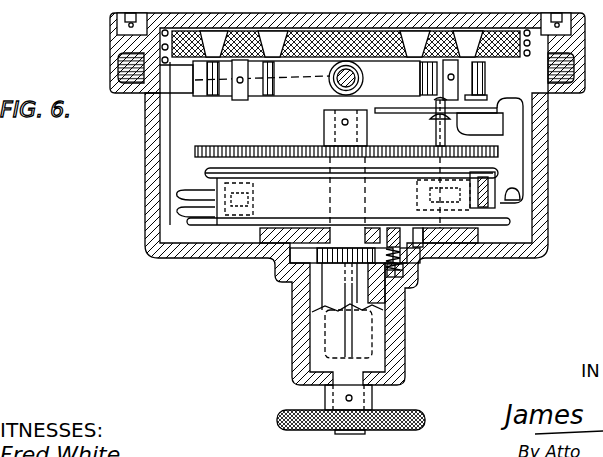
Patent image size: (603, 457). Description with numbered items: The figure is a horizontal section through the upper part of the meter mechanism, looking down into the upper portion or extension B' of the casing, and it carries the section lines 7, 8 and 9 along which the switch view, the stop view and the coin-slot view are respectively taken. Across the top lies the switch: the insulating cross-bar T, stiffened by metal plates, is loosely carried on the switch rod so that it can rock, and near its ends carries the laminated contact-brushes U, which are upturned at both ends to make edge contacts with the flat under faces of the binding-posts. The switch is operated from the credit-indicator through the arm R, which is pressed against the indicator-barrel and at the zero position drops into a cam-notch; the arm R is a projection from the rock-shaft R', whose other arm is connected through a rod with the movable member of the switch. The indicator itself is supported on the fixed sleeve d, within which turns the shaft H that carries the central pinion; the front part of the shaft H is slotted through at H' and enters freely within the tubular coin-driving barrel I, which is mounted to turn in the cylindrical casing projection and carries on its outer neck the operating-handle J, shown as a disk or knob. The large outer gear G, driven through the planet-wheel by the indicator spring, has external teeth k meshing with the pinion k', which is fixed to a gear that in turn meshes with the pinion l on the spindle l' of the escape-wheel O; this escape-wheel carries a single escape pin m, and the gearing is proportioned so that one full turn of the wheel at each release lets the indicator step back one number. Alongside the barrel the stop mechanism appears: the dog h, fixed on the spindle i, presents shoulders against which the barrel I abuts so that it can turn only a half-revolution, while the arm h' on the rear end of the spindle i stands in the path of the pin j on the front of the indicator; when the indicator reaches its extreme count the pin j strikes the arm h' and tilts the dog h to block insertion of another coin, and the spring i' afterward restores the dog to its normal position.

The cross-bar T is at (306, 78).
The contact-brush U is at (468, 75).
The escape pin m is at (514, 88).
The escape-wheel O is at (358, 129).
The spindle of the escape-wheel l' is at (439, 124).
The pinion k' is at (427, 126).
The outer gear G is at (226, 132).
The external teeth k is at (268, 122).
The pinion l is at (351, 170).
The arm R is at (178, 204).
The rock-shaft R' is at (159, 175).
The sleeve d is at (298, 200).
The shaft H is at (369, 245).
The spindle i is at (389, 231).
The arm h' is at (410, 220).
The pin j is at (443, 228).
The dog h is at (419, 279).
The spring i' is at (413, 274).
The slot H' is at (322, 305).
The coin-driving part I is at (348, 310).
The operating-handle J is at (351, 420).
The upper portion of the casing B' is at (552, 164).
The section line 7 7 is at (145, 116).
The section line 8 8 is at (272, 281).
The section line 9 9 is at (285, 322).